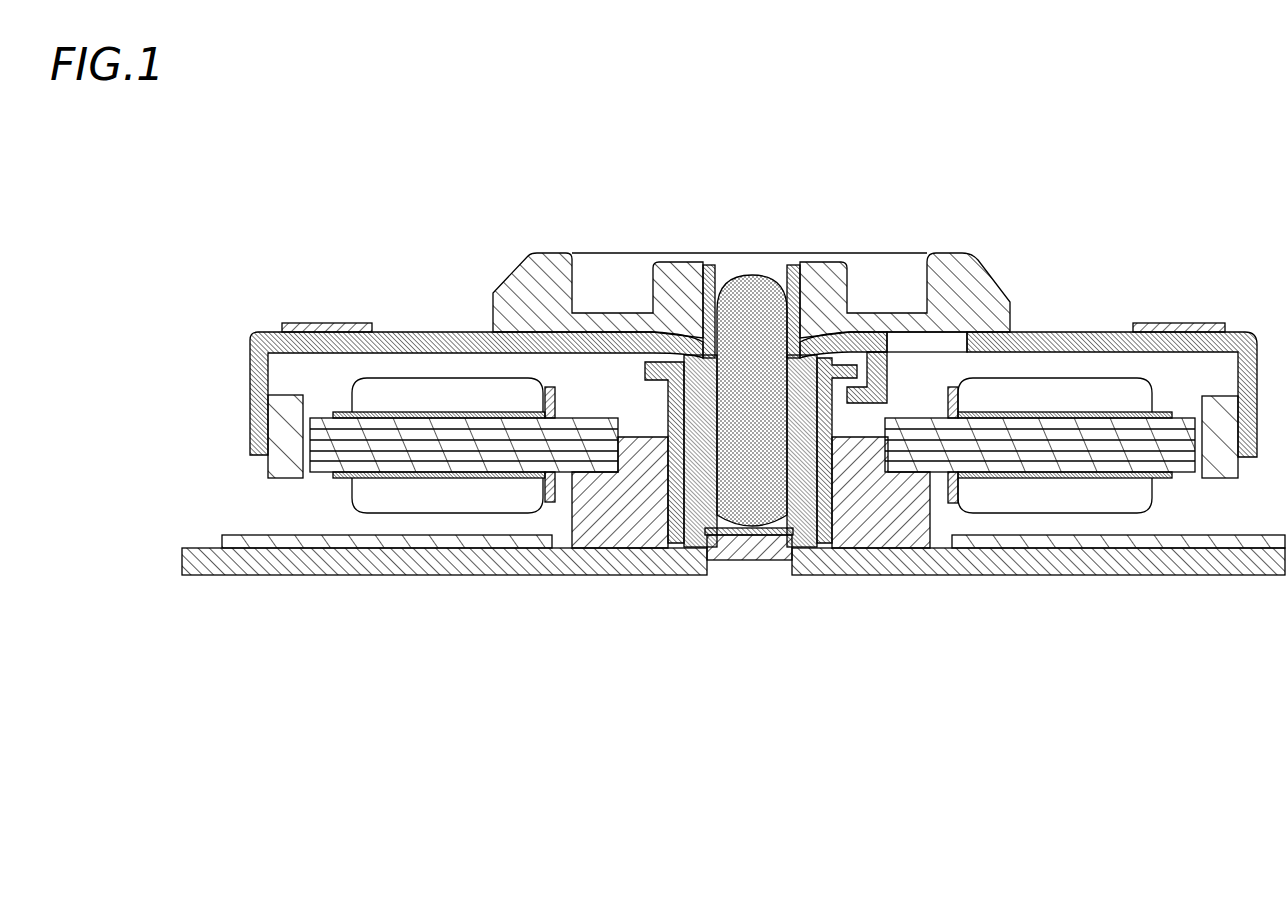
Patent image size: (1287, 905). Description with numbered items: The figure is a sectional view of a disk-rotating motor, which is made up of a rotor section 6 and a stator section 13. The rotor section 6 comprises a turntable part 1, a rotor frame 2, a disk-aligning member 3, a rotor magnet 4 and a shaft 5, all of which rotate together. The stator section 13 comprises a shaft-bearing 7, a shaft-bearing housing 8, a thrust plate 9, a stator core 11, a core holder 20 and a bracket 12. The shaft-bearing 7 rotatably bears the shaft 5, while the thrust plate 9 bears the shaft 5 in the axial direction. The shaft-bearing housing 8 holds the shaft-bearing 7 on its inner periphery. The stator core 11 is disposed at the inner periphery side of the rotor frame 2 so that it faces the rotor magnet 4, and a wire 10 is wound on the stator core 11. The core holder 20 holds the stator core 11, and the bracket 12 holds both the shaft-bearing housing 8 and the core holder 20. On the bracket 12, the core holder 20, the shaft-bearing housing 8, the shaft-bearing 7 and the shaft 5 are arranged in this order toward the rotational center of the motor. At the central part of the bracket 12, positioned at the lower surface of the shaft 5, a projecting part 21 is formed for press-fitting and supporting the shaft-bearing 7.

The turntable part 1 is at (382, 330).
The rotor frame 2 is at (407, 338).
The disk-aligning member 3 is at (548, 280).
The rotor magnet 4 is at (282, 405).
The shaft 5 is at (757, 327).
The rotor section 6 is at (468, 317).
The shaft-bearing 7 is at (700, 385).
The shaft-bearing housing 8 is at (664, 386).
The thrust plate 9 is at (777, 537).
The wire 10 is at (1073, 497).
The stator core 11 is at (1135, 447).
The bracket 12 is at (985, 542).
The stator section 13 is at (1229, 592).
The core holder 20 is at (887, 540).
The projecting part 21 is at (733, 543).